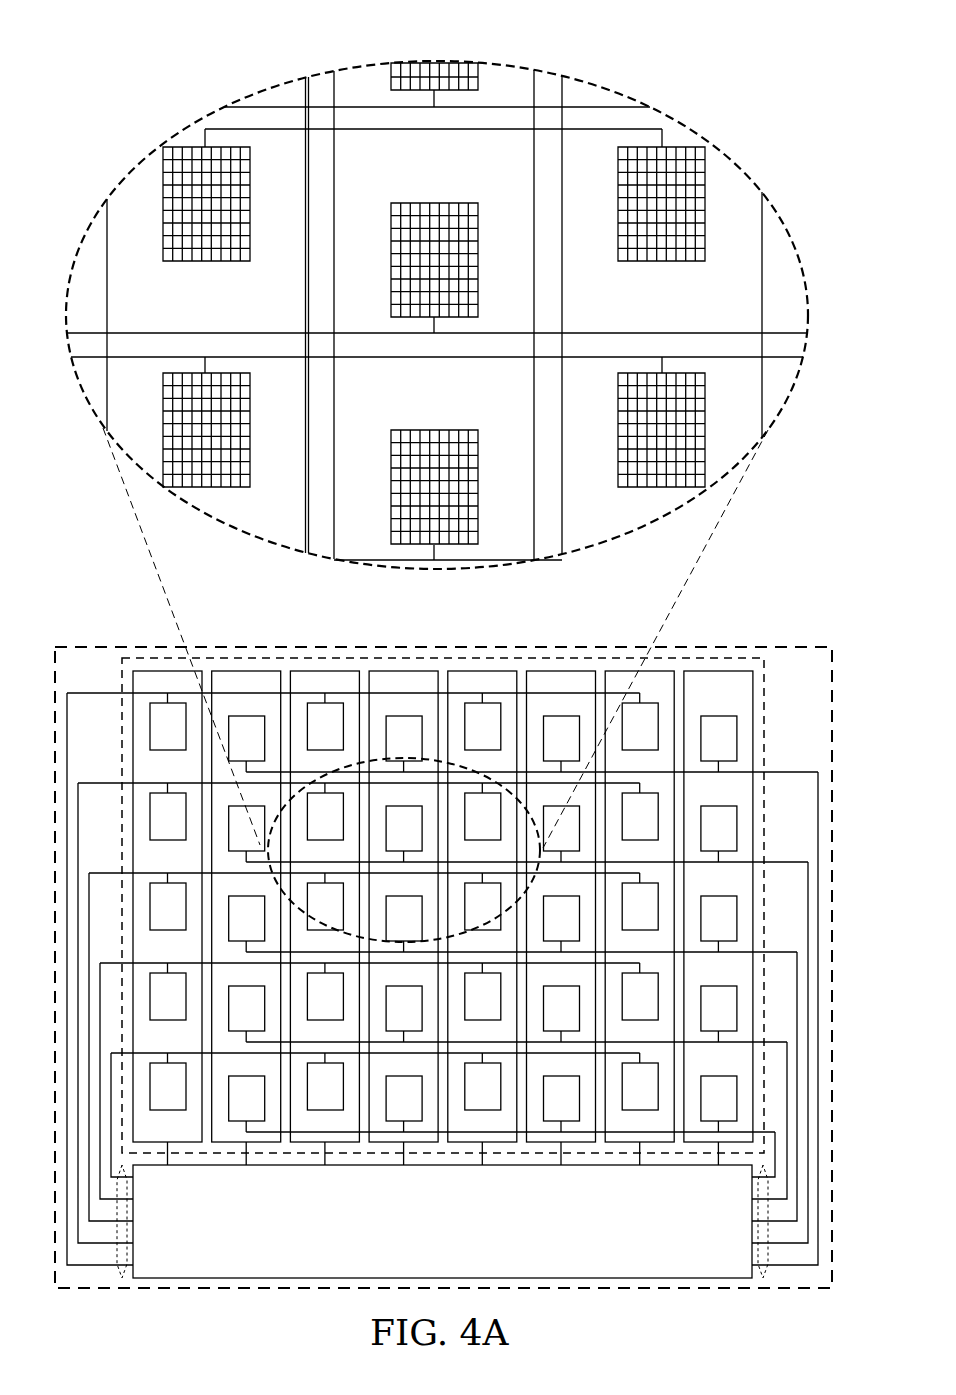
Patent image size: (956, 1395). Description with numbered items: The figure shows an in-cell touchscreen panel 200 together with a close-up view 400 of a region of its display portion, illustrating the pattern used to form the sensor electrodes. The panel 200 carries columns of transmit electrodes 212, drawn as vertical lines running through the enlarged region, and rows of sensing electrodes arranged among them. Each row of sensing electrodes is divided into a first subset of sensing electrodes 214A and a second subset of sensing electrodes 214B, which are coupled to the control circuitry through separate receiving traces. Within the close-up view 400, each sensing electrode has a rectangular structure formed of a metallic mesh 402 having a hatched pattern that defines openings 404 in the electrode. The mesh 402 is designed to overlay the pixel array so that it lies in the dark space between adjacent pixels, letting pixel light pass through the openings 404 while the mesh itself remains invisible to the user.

The close-up view 400 is at (259, 88).
The transmit electrodes 212 is at (516, 72).
The first subset of sensing electrodes 214A is at (708, 192).
The second subset of sensing electrodes 214B is at (445, 550).
The metallic mesh 402 is at (697, 215).
The openings 404 is at (480, 540).
The in-cell touchscreen panel 200 is at (285, 645).